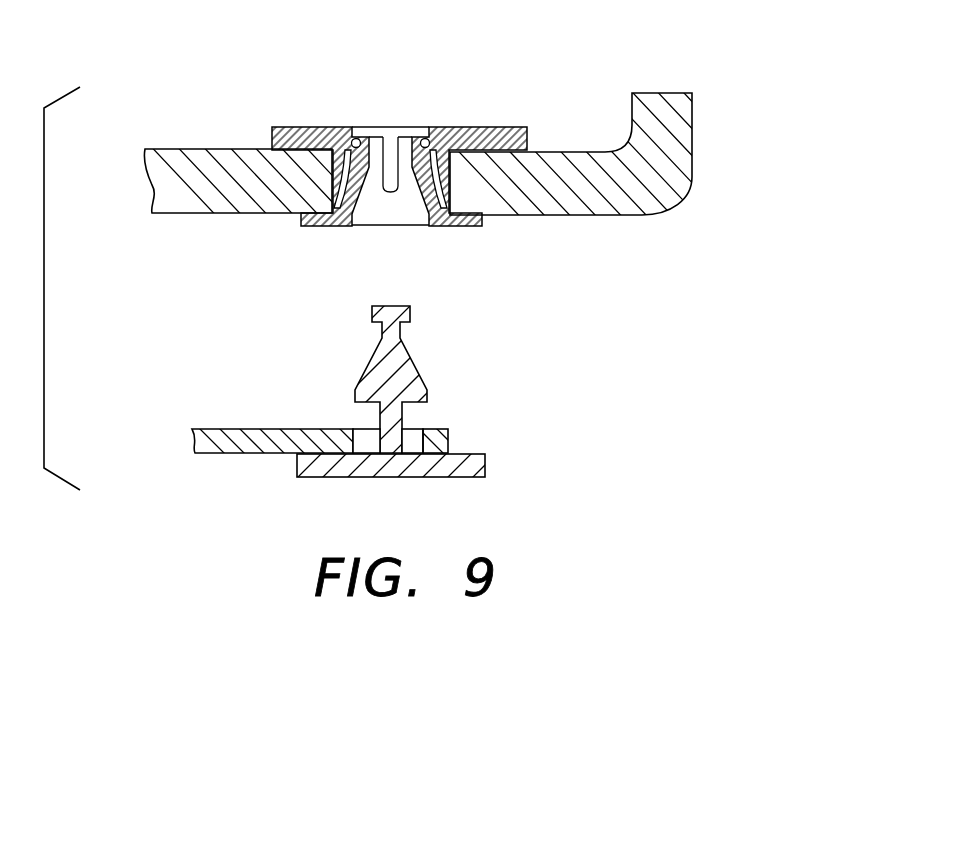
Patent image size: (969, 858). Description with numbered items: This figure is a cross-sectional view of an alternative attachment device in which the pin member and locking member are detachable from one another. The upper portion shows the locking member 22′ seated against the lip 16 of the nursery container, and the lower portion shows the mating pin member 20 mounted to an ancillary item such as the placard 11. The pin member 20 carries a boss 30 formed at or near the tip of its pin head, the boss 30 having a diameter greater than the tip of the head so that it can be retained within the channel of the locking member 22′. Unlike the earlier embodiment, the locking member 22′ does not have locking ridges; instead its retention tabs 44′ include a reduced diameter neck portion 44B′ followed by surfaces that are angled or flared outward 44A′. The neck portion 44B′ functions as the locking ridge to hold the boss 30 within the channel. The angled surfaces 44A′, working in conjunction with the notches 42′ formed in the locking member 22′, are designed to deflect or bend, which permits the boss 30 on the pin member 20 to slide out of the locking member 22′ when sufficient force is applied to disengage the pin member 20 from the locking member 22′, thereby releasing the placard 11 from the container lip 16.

The locking member 22′ is at (455, 142).
The angled surfaces 44A′ is at (372, 150).
The neck portion 44B′ is at (408, 147).
The retention tabs 44′ is at (375, 186).
The notches 42′ is at (395, 185).
The lip 16 is at (630, 215).
The boss 30 is at (409, 313).
The pin member 20 is at (513, 467).
The placard 11 is at (223, 453).